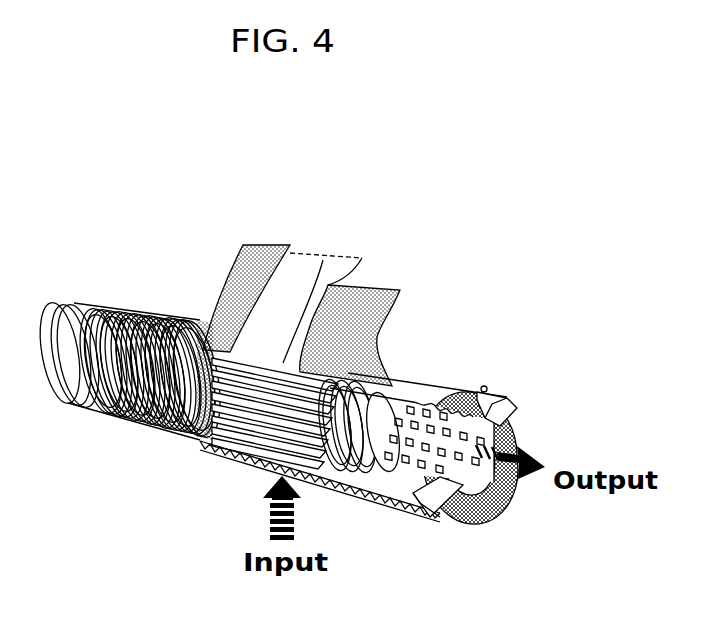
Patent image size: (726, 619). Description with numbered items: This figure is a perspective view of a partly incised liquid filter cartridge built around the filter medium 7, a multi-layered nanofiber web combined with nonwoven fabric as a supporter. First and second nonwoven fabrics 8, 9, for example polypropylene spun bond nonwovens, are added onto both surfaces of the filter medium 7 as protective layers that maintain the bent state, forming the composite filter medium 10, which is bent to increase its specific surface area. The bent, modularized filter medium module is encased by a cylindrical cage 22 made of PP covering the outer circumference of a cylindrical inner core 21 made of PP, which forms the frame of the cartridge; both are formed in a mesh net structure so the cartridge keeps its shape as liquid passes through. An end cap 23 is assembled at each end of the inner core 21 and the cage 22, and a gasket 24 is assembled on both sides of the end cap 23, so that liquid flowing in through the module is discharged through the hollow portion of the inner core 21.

The filter medium 7 is at (323, 260).
The first nonwoven fabric 8 is at (363, 290).
The second nonwoven fabric 9 is at (278, 243).
The composite filter medium 10 is at (408, 183).
The inner core 21 is at (390, 388).
The cage 22 is at (141, 429).
The end cap 23 is at (422, 505).
The gasket 24 is at (480, 512).